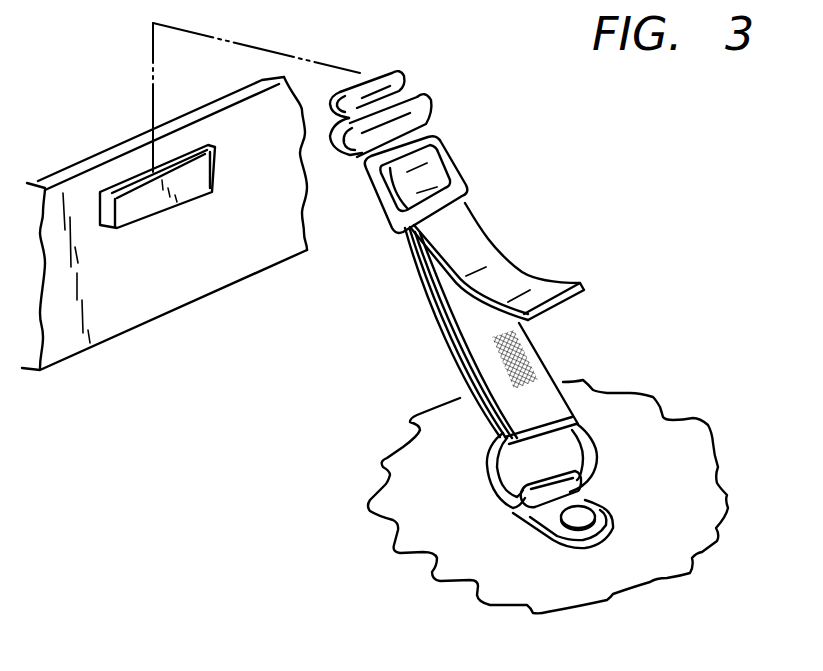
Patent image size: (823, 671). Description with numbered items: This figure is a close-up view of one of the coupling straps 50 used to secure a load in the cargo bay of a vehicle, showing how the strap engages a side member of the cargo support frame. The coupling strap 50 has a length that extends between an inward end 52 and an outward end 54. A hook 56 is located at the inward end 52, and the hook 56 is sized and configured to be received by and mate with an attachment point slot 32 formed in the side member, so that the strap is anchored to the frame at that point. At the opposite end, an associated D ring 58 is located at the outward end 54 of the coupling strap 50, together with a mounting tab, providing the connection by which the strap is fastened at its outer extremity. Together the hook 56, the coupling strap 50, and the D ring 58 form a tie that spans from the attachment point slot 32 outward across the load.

The attachment point slot 32 is at (141, 217).
The coupling strap 50 is at (530, 263).
The inward end 52 is at (430, 118).
The outward end 54 is at (567, 420).
The hook 56 is at (400, 72).
The D ring 58 is at (587, 474).